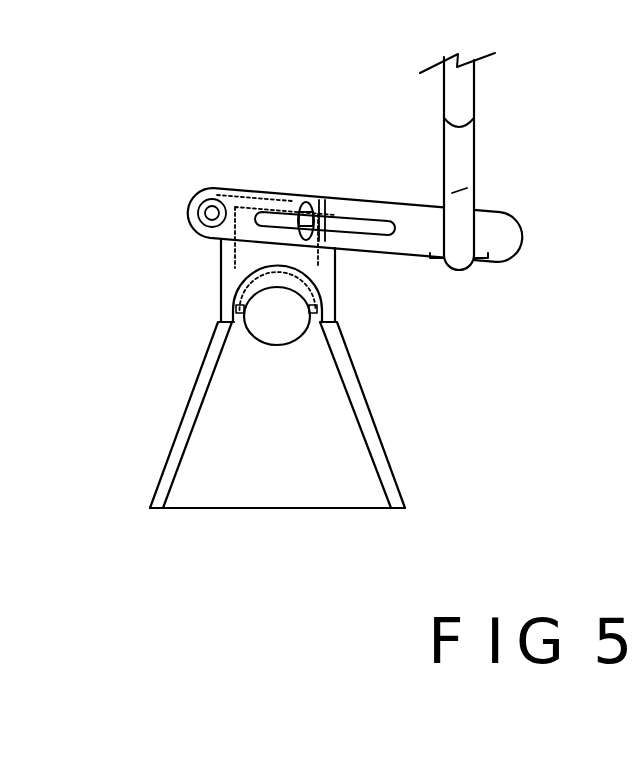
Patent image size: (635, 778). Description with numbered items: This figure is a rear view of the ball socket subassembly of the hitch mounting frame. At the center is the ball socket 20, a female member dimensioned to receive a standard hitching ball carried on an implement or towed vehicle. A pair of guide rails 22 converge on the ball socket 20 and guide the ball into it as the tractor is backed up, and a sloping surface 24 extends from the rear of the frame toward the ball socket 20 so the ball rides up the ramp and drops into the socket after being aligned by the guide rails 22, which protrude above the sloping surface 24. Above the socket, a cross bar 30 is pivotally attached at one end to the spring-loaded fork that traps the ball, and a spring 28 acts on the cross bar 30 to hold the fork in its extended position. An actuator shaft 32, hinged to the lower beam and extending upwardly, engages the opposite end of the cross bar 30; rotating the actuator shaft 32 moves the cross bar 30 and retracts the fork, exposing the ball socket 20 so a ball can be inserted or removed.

The ball socket 20 is at (268, 312).
The guide rails 22 is at (178, 425).
The sloping surface 24 is at (267, 483).
The spring 28 is at (303, 216).
The cross bar 30 is at (383, 207).
The actuator shaft 32 is at (470, 156).